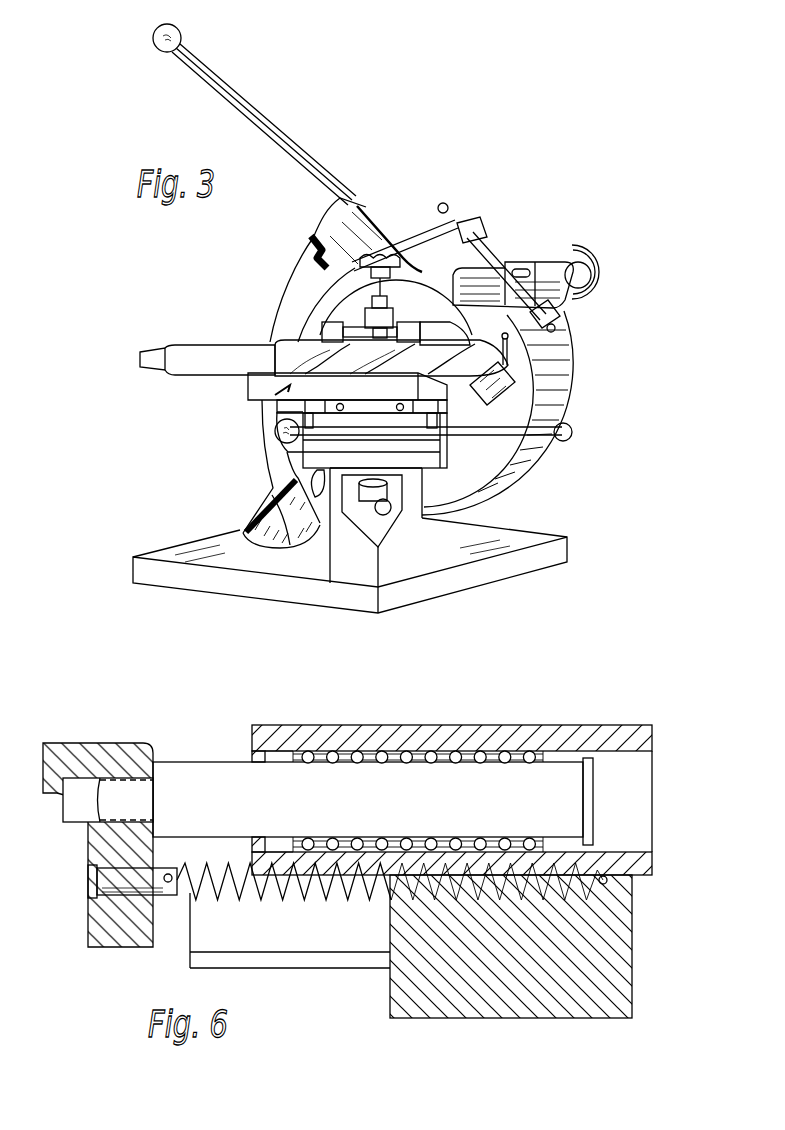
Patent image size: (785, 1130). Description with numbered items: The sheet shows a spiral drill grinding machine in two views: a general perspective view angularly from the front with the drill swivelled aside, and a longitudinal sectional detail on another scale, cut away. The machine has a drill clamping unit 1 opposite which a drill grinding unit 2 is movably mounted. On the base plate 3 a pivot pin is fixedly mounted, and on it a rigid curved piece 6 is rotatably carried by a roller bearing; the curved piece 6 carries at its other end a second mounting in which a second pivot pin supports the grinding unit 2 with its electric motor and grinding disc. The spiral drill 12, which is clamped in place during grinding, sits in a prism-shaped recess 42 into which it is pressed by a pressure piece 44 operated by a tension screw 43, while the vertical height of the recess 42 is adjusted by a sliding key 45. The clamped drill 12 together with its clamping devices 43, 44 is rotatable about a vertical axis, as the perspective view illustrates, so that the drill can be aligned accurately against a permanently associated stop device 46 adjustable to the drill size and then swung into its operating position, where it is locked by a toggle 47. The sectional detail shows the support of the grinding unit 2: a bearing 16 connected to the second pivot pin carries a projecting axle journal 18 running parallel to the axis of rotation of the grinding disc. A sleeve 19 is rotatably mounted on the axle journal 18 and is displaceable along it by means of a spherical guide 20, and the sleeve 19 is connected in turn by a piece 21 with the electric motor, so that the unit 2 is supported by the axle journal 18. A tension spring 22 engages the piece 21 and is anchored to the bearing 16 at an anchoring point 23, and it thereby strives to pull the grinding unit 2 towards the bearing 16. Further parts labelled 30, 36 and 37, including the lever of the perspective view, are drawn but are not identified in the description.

In FIG. 3, the drill clamping unit 1 is at (273, 402).
In FIG. 3, the drill grinding unit 2 is at (574, 348).
In FIG. 3, the base plate 3 is at (168, 555).
In FIG. 3, the rigid curved piece 6 is at (280, 468).
In FIG. 3, the spiral drill 12 is at (195, 355).
In FIG. 3, the sleeve 19 is at (540, 260).
In FIG. 6, the sleeve 19 is at (387, 737).
In FIG. 3, the hand knob 30 is at (585, 250).
In FIG. 3, the actuating rod 36 is at (449, 206).
In FIG. 3, the hand lever 37 is at (221, 88).
In FIG. 3, the prism-shaped recess 42 is at (257, 384).
In FIG. 3, the tension screw 43 is at (378, 262).
In FIG. 3, the pressure piece 44 is at (330, 328).
In FIG. 3, the sliding key 45 is at (527, 432).
In FIG. 3, the stop device 46 is at (543, 399).
In FIG. 3, the toggle 47 is at (391, 505).
In FIG. 6, the bearing 16 is at (88, 762).
In FIG. 6, the axle journal 18 is at (193, 778).
In FIG. 6, the spherical guide 20 is at (533, 754).
In FIG. 6, the piece 21 is at (397, 995).
In FIG. 6, the tension spring 22 is at (277, 900).
In FIG. 6, the anchoring point 23 is at (143, 877).